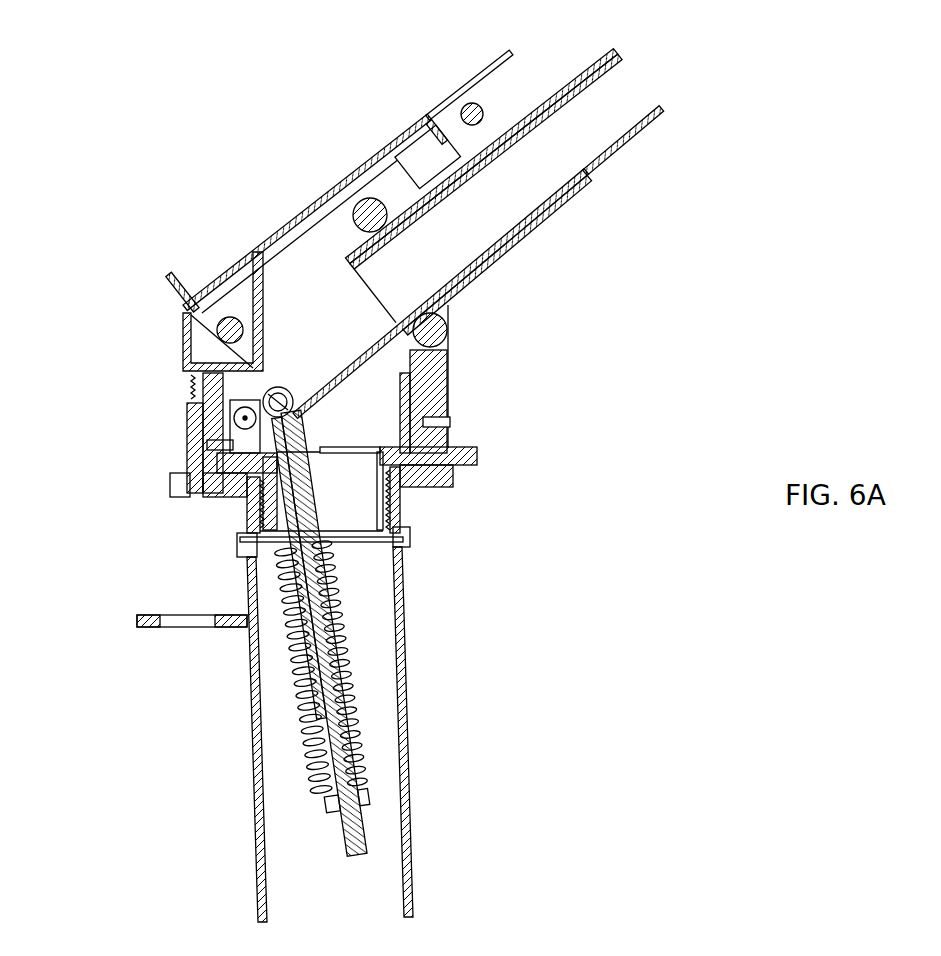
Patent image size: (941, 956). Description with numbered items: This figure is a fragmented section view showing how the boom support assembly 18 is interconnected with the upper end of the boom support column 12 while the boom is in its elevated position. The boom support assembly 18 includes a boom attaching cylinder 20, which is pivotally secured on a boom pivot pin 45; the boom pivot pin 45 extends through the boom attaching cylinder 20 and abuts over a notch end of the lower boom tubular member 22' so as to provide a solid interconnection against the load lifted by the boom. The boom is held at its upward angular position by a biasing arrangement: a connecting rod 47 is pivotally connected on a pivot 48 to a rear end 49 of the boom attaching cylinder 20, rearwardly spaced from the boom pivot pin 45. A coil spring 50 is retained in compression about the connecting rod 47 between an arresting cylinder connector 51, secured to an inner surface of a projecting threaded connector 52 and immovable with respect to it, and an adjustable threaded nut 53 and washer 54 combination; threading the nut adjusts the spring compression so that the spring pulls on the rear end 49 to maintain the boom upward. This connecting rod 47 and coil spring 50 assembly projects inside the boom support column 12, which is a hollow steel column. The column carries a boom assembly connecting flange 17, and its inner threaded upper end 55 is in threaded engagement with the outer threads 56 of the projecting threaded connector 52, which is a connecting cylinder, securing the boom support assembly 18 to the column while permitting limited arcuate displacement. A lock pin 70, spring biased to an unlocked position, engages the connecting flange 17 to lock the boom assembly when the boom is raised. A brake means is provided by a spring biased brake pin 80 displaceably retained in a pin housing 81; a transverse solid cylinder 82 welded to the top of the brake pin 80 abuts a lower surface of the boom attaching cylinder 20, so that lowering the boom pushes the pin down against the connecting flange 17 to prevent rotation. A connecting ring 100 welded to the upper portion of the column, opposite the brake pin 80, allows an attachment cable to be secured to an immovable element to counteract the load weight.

The boom support assembly 18 is at (151, 233).
The boom pivot pin 45 is at (372, 212).
The lower boom tubular member 22' is at (656, 141).
The boom attaching cylinder 20 is at (567, 200).
The transverse solid cylinder 82 is at (435, 335).
The brake pin 80 is at (430, 367).
The pin housing 81 is at (450, 380).
The pivot 48 is at (278, 400).
The connecting rod 47 is at (280, 437).
The rear end 49 is at (176, 360).
The lock pin 70 is at (210, 410).
The boom assembly connecting flange 17 is at (447, 477).
The outer threads 56 is at (393, 499).
The projecting threaded connector 52 is at (397, 510).
The inner threaded upper end 55 is at (397, 520).
The arresting cylinder connector 51 is at (260, 522).
The connecting ring 100 is at (137, 620).
The coil spring 50 is at (343, 643).
The boom support column 12 is at (405, 702).
The adjustable threaded nut 53 is at (365, 800).
The washer 54 is at (323, 803).